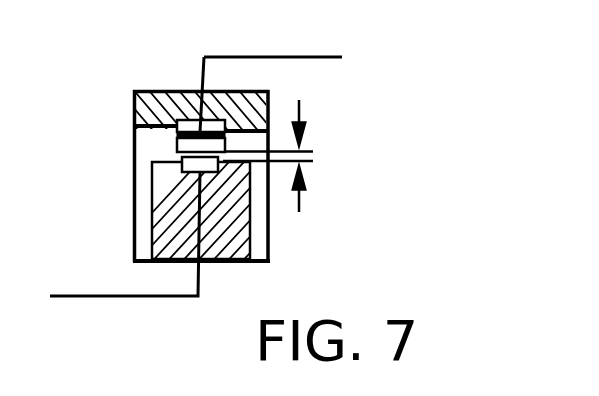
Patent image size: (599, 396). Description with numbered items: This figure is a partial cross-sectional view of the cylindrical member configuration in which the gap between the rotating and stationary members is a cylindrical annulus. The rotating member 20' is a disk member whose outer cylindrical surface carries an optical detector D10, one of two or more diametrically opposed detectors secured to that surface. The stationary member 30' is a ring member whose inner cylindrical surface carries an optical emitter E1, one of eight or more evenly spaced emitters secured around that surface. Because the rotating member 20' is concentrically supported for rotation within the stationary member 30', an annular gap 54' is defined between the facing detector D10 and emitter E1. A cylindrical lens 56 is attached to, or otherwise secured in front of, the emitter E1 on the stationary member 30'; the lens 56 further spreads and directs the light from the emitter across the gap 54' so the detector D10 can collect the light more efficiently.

The optical emitter E1 is at (195, 127).
The cylindrical lens 56 is at (177, 139).
The optical detector D10 is at (152, 183).
The rotating member 20' is at (216, 215).
The stationary member 30' is at (221, 176).
The annular gap 54' is at (314, 156).